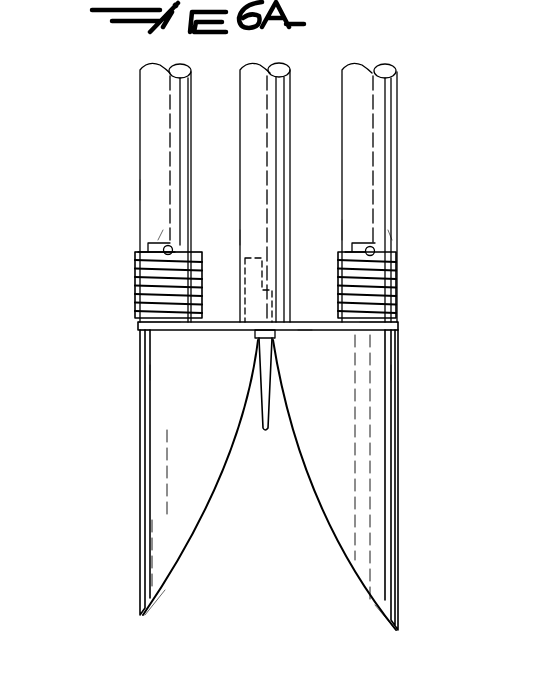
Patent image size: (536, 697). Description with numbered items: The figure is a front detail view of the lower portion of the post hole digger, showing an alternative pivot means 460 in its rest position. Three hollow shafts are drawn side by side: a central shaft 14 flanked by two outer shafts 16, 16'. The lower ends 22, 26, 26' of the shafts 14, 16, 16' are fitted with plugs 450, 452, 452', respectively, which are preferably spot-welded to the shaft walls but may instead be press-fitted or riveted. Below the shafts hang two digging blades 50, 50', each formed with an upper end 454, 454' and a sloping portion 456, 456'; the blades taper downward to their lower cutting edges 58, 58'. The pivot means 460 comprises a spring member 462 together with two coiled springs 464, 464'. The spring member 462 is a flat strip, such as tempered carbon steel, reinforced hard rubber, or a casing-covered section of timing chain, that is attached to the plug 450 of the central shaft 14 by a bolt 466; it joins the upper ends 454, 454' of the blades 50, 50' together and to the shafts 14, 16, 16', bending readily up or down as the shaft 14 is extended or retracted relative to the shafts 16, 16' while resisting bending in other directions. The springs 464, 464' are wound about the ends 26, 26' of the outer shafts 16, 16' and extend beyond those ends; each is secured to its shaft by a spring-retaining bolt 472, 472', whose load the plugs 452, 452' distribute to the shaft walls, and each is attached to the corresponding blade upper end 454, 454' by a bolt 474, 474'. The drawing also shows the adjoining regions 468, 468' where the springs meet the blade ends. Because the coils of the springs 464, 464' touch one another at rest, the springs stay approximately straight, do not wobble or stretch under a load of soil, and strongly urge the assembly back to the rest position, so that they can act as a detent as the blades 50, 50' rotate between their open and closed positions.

The hollow shaft 14 is at (240, 97).
The hollow shaft 16 is at (137, 192).
The hollow shaft 16' is at (397, 192).
The end of hollow shaft 22 is at (240, 225).
The end of hollow shaft 26 is at (108, 173).
The end of hollow shaft 26' is at (321, 210).
The digging blade 50 is at (167, 472).
The digging blade 50' is at (362, 480).
The left blade cutting edge 58 is at (180, 584).
The right blade cutting edge 58' is at (339, 589).
The plug 450 is at (272, 247).
The plug 452 is at (117, 213).
The plug 452' is at (430, 223).
The upper end of digging blade 454 is at (106, 348).
The upper end of digging blade 454' is at (427, 350).
The sloping portion 456 is at (223, 368).
The sloping portion 456' is at (315, 356).
The pivot means 460 is at (121, 287).
The spring member 462 is at (222, 318).
The spring 464 is at (134, 233).
The spring 464' is at (415, 285).
The bolt 466 is at (264, 430).
The left plate end 468 is at (114, 318).
The right plate end 468' is at (428, 325).
The bolt 472 is at (206, 239).
The bolt 472' is at (426, 266).
The bolt 474 is at (108, 379).
The bolt 474' is at (430, 385).